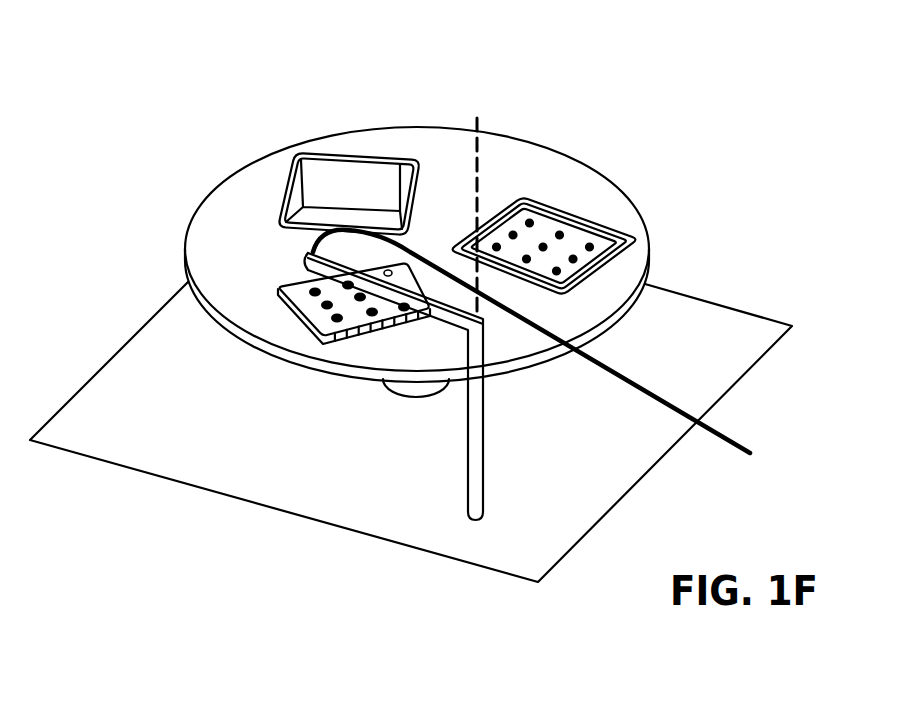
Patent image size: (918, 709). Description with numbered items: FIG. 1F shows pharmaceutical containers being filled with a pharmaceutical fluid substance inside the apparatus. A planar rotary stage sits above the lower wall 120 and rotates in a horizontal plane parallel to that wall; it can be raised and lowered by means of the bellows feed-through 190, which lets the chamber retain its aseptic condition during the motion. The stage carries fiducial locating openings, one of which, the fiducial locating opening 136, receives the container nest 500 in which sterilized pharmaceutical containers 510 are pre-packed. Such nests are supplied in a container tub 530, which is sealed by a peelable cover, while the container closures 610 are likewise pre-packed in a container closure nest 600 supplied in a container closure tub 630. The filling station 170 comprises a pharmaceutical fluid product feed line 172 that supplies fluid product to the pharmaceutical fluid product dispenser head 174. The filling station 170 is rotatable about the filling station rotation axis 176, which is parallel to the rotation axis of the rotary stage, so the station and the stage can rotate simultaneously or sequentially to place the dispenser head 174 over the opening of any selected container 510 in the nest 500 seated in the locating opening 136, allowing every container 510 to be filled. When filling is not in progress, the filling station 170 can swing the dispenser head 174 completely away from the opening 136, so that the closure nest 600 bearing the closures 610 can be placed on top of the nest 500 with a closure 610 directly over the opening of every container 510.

The lower wall 120 is at (707, 353).
The fiducial locating opening 136 is at (236, 433).
The filling station 170 is at (406, 392).
The pharmaceutical fluid product feed line 172 is at (740, 438).
The pharmaceutical fluid product dispenser head 174 is at (307, 270).
The filling station rotation axis 176 is at (482, 155).
The bellows feed-through 190 is at (413, 388).
The container nest 500 is at (298, 313).
The pharmaceutical container 510 is at (335, 340).
The container tub 530 is at (415, 158).
The container closure nest 600 is at (616, 181).
The pharmaceutical container closure 610 is at (590, 246).
The container closure tub 630 is at (628, 240).